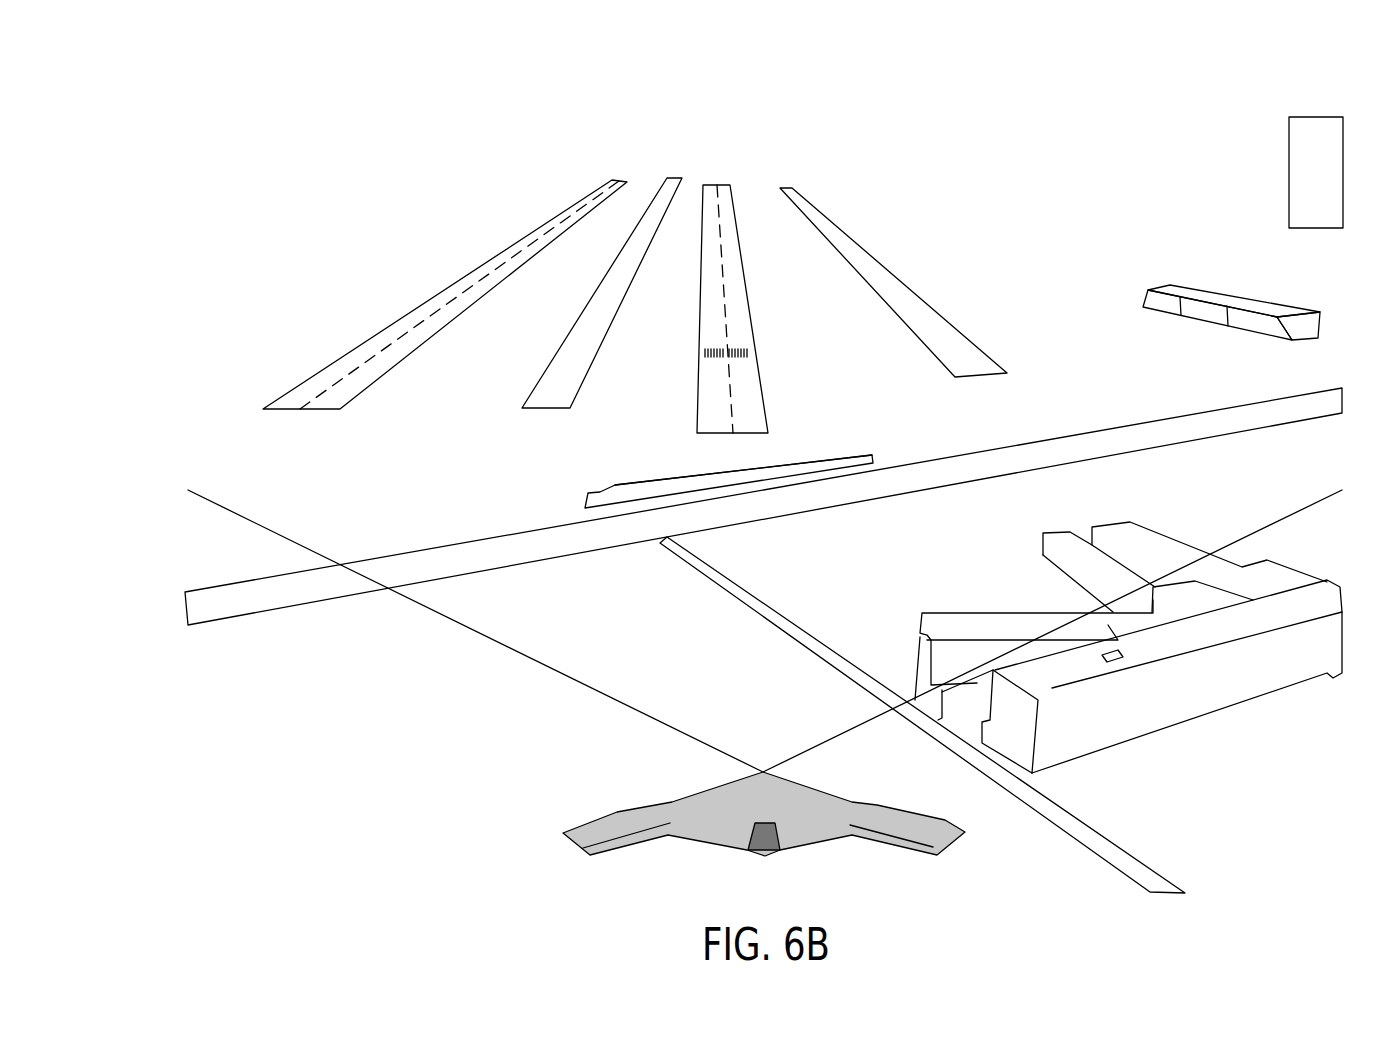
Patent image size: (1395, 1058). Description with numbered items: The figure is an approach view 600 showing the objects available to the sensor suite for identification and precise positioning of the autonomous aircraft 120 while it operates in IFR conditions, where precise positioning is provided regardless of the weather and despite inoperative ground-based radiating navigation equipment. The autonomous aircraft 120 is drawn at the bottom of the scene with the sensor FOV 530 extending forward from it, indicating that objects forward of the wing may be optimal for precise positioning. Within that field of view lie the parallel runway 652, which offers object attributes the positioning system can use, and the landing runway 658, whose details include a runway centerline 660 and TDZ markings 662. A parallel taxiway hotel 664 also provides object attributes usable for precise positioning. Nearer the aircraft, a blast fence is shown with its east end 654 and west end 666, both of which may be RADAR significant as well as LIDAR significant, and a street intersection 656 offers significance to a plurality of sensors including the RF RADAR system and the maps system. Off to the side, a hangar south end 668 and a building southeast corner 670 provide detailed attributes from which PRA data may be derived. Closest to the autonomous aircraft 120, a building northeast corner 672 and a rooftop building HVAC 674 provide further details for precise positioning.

The approach view 600 is at (126, 119).
The parallel runway LAS 19L 652 is at (447, 302).
The east end of blast fence 654 is at (583, 498).
The street intersection 656 is at (660, 542).
The landing runway LAS 19R 658 is at (717, 405).
The runway centerline 660 is at (725, 277).
The TDZ markings 662 is at (748, 352).
The parallel taxiway hotel 664 is at (950, 352).
The west end of blast fence 666 is at (877, 460).
The hangar south end 668 is at (1147, 292).
The building southeast corner 670 is at (1290, 122).
The building northeast corner 672 is at (1040, 698).
The rooftop building HVAC 674 is at (1123, 657).
The sensor FOV 530 is at (475, 637).
The autonomous aircraft 120 is at (958, 837).